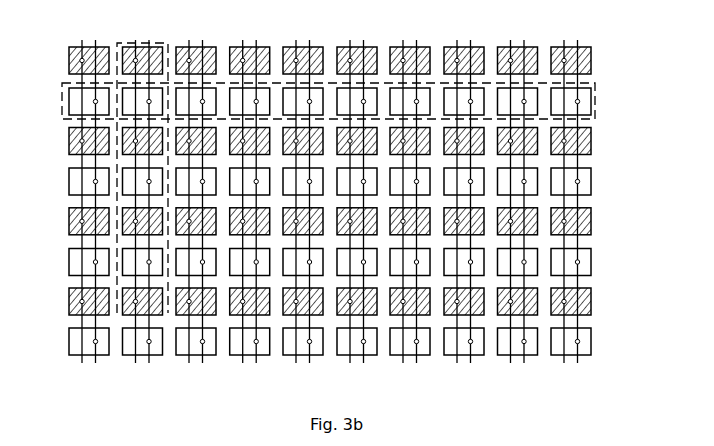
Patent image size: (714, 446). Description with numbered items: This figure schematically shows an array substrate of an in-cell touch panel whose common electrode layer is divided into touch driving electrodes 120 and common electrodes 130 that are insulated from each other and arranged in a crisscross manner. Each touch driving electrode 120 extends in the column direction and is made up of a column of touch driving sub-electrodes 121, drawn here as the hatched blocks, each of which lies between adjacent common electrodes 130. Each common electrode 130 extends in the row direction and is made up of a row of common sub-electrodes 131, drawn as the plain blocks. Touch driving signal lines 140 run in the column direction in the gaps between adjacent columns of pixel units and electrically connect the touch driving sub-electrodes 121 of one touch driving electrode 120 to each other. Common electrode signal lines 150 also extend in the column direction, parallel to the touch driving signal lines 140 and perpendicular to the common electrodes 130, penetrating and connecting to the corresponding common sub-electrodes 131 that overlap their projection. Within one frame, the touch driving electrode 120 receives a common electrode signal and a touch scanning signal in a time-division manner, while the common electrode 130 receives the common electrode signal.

The touch driving electrode 120 is at (158, 43).
The touch driving sub-electrode 121 is at (100, 47).
The common electrode 130 is at (63, 85).
The common sub-electrode 131 is at (73, 167).
The touch driving signal line 140 is at (83, 47).
The common electrode signal line 150 is at (203, 43).